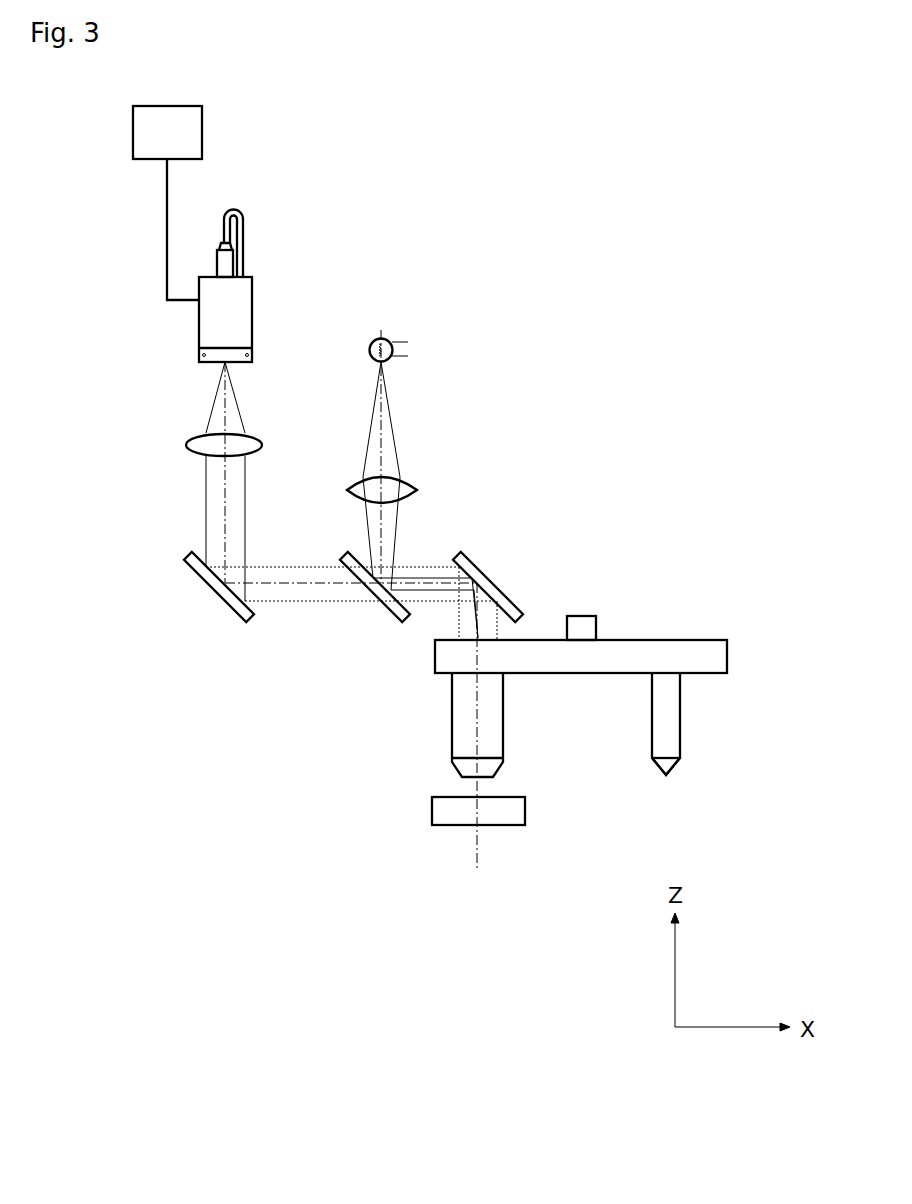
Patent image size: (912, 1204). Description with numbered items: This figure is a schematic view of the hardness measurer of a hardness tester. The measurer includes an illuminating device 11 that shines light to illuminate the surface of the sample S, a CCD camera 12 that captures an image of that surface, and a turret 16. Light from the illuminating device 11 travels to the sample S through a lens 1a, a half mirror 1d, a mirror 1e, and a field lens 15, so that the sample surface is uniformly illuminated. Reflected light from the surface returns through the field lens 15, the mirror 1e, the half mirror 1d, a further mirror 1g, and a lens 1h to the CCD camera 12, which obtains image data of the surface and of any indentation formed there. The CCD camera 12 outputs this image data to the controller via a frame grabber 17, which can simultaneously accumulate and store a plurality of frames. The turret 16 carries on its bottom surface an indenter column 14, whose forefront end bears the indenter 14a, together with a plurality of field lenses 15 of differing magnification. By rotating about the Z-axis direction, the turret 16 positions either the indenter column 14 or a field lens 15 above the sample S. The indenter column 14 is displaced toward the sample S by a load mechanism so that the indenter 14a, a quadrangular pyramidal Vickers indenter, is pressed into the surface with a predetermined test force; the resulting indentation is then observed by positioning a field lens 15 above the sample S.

The frame grabber 17 is at (205, 130).
The CCD camera 12 is at (253, 297).
The lens 1h is at (195, 438).
The mirror 1g is at (186, 556).
The half mirror 1d is at (400, 610).
The mirror 1e is at (478, 565).
The lens 1a is at (352, 486).
The illuminating device 11 is at (392, 341).
The turret 16 is at (673, 639).
The field lens 15 is at (505, 720).
The indenter column 14 is at (682, 720).
The indenter 14a is at (673, 767).
The sample S is at (530, 810).